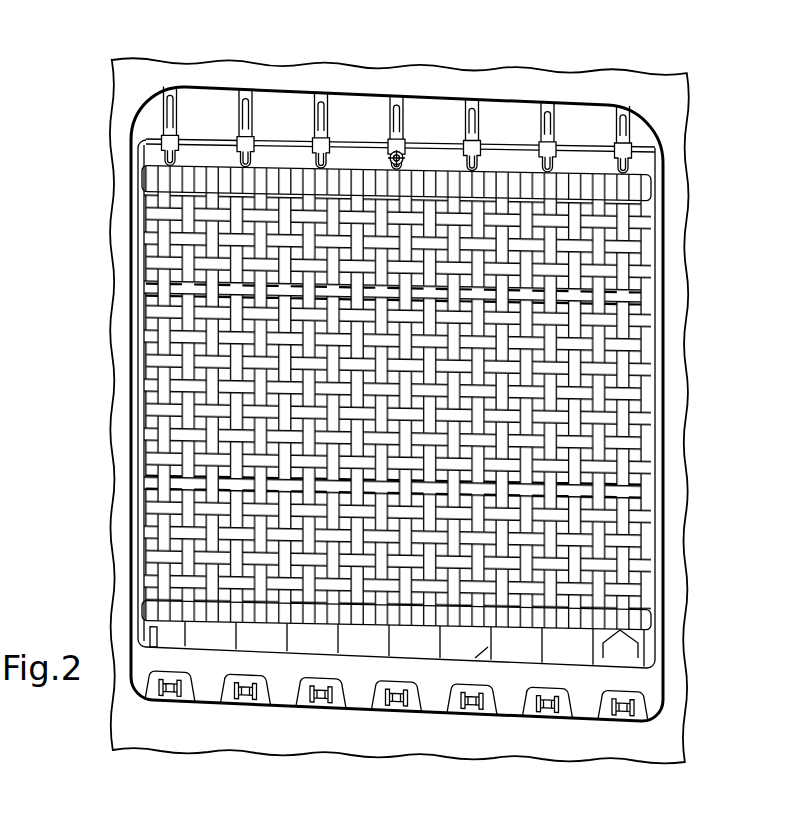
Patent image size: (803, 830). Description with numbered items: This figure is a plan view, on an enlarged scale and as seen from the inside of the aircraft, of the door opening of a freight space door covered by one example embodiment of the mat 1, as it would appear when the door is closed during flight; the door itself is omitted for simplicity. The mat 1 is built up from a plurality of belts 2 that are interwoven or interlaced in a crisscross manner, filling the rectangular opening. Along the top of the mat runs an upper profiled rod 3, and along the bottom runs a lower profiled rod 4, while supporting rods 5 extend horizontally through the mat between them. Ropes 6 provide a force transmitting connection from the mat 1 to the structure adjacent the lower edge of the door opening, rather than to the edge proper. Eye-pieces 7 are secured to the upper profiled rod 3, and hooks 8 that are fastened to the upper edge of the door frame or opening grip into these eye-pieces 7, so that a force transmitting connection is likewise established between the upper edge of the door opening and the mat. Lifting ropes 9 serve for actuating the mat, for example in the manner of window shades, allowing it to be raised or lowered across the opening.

The mat 1 is at (180, 373).
The belts 2 is at (630, 240).
The upper profiled rod 3 is at (567, 167).
The lower profiled rod 4 is at (642, 648).
The supporting rods 5 is at (600, 303).
The ropes 6 is at (545, 642).
The eye-pieces 7 is at (233, 157).
The hooks 8 is at (483, 160).
The lifting ropes 9 is at (133, 147).